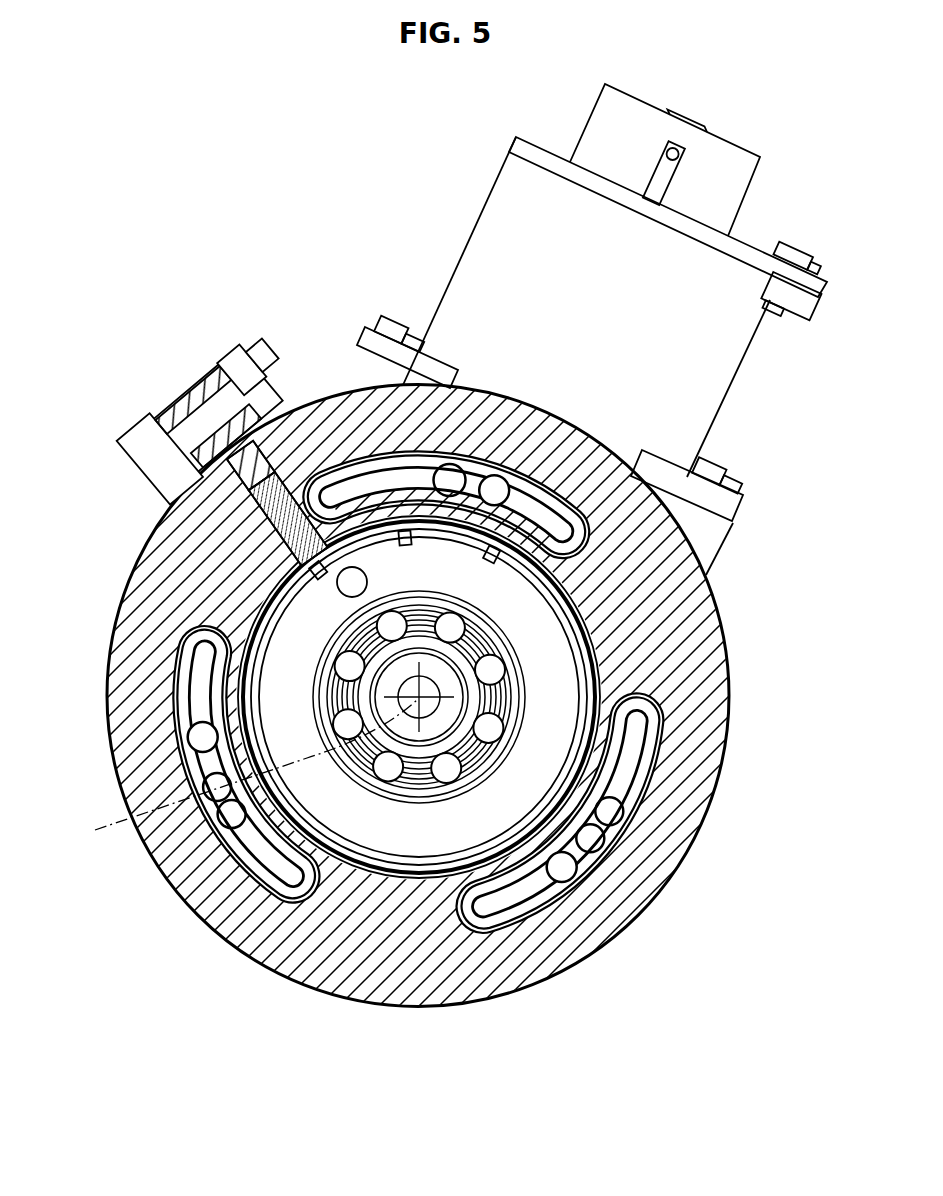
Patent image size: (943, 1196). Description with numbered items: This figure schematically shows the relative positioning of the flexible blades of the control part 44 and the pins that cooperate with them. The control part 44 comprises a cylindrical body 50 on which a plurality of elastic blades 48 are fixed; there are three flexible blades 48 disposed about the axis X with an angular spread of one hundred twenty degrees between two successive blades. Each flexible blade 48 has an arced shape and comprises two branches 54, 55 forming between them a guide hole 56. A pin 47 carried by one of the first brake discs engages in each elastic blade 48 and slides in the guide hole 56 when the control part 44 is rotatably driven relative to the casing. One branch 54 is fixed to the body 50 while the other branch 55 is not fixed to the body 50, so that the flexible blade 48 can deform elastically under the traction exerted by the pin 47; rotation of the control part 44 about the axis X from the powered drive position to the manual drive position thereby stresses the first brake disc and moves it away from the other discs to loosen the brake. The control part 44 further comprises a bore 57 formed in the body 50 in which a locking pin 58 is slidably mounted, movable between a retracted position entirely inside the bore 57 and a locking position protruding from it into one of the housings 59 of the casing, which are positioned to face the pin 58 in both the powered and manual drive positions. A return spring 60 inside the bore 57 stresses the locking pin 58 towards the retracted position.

The control part 44 is at (678, 878).
The pin 47 is at (494, 488).
The elastic blade 48 is at (545, 480).
The cylindrical body 50 is at (372, 958).
The branch 54 is at (653, 750).
The branch 55 is at (622, 732).
The guide hole 56 is at (623, 787).
The bore 57 is at (268, 478).
The locking pin 58 is at (278, 485).
The housing 59 is at (317, 572).
The return spring 60 is at (290, 497).
The axis X is at (245, 774).